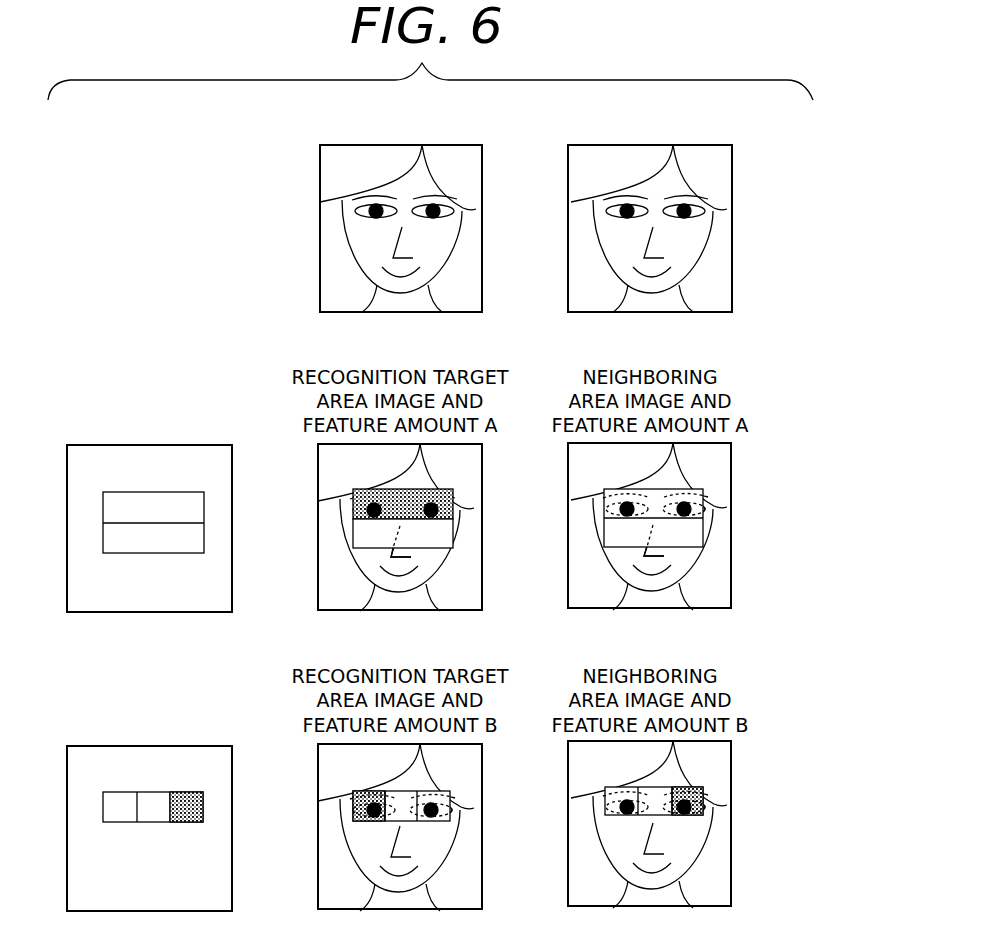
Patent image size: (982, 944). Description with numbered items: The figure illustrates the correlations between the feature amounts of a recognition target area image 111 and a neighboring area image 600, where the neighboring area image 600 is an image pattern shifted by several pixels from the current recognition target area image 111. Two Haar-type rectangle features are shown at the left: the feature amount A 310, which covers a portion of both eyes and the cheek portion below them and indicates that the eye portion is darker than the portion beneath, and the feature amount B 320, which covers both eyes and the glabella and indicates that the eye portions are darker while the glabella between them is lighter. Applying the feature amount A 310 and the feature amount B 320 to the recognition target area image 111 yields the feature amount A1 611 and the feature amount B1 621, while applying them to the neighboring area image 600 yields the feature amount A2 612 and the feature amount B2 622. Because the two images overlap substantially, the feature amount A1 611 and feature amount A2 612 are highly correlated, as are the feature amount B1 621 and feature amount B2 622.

The recognition target area image 111 is at (482, 170).
The neighboring area image 600 is at (732, 168).
The feature amount A 310 is at (170, 492).
The feature amount B 320 is at (170, 792).
The feature amount A1 611 is at (432, 485).
The feature amount A2 612 is at (672, 485).
The feature amount B1 621 is at (420, 792).
The feature amount B2 622 is at (672, 789).